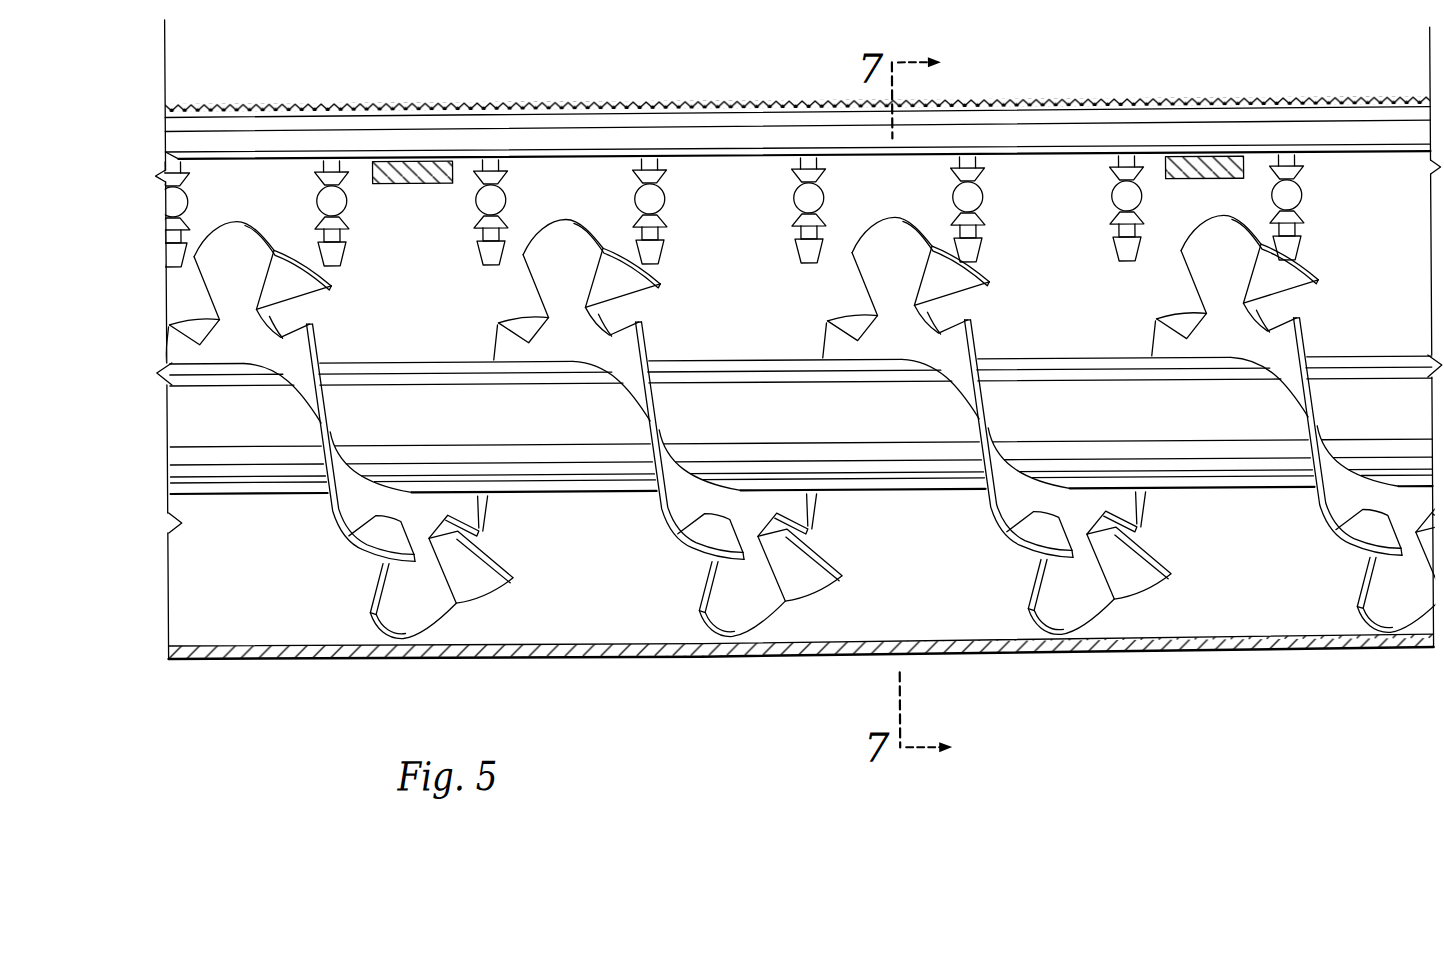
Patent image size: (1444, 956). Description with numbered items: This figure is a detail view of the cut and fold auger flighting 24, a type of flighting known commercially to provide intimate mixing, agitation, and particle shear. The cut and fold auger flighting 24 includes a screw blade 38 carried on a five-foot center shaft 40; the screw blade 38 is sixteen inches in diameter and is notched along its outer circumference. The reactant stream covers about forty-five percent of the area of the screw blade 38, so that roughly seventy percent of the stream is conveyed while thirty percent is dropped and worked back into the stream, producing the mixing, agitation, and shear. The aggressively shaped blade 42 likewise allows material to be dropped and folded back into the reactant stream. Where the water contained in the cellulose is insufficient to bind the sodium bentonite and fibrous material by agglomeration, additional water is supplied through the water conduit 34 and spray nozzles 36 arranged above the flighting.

The cut and fold auger flighting 24 is at (664, 587).
The water conduit 34 is at (529, 145).
The spray nozzles 36 is at (187, 245).
The screw blade 38 is at (331, 513).
The center shaft 40 is at (592, 497).
The blade 42 is at (495, 566).